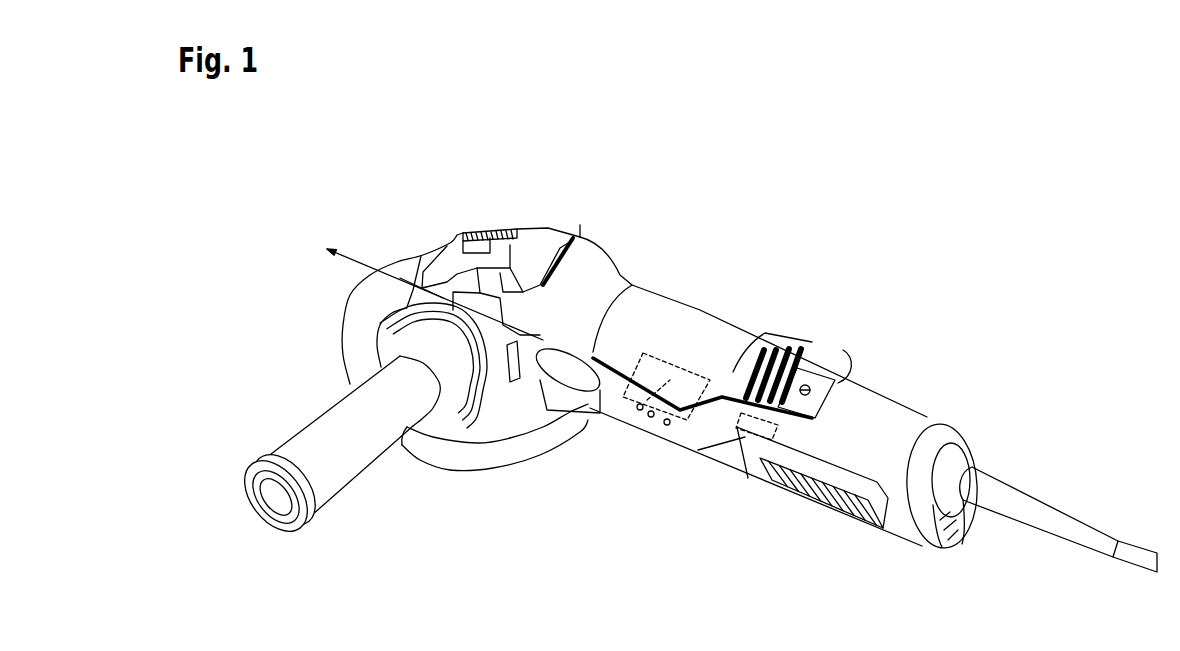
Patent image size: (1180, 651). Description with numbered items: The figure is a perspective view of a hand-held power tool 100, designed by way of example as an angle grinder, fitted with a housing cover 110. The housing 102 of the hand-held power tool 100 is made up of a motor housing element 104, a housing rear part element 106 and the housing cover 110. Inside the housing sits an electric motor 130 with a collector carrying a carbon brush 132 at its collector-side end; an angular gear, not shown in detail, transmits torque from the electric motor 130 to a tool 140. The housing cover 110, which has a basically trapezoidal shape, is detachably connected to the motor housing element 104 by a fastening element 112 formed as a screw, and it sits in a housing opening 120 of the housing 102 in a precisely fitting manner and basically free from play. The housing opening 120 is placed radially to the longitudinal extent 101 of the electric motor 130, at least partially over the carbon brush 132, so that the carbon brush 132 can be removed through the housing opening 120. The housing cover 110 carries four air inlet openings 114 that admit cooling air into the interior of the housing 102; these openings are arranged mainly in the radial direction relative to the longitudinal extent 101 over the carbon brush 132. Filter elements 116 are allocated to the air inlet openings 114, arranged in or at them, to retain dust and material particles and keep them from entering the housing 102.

The hand-held power tool 100 is at (910, 252).
The longitudinal extent 101 is at (362, 250).
The housing 102 is at (940, 372).
The motor housing element 104 is at (632, 265).
The housing rear part element 106 is at (925, 416).
The housing cover 110 is at (778, 333).
The fastening element 112 is at (830, 368).
The air inlet openings 114 is at (812, 380).
The filter elements 116 is at (757, 405).
The housing opening 120 is at (848, 392).
The electric motor 130 is at (643, 418).
The carbon brush 132 is at (739, 432).
The tool 140 is at (418, 266).